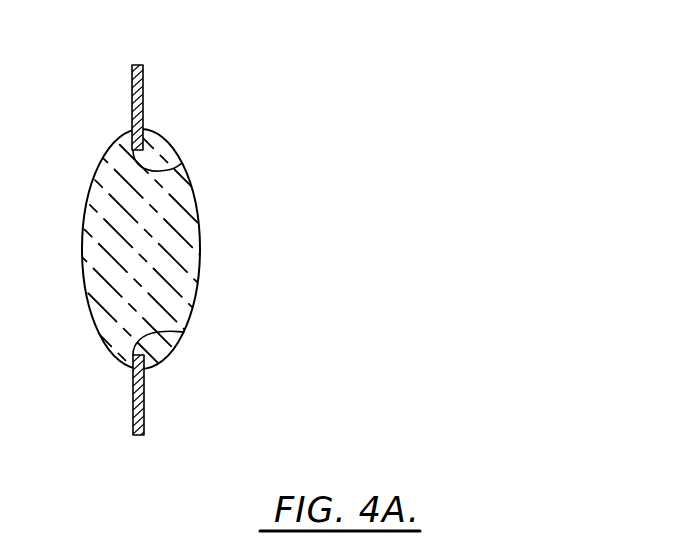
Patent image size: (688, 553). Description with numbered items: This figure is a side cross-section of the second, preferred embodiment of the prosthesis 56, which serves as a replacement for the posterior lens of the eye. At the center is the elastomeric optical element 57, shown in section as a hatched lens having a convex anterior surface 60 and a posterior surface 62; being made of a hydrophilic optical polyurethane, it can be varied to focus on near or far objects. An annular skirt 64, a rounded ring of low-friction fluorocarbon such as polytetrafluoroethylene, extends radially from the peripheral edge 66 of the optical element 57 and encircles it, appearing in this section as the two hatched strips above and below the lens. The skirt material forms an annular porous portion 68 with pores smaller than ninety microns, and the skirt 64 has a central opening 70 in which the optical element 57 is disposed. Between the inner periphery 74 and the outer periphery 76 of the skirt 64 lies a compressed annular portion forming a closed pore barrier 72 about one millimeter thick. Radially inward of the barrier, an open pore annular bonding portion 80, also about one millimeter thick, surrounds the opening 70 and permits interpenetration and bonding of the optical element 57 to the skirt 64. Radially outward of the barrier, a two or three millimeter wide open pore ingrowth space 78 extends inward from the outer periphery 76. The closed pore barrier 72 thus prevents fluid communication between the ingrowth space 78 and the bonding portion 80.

The prosthesis 56 is at (192, 252).
The optical element 57 is at (150, 260).
The convex anterior surface 60 is at (192, 250).
The posterior surface 62 is at (192, 250).
The annular skirt 64 is at (198, 248).
The peripheral edge 66 is at (130, 133).
The annular porous portion 68 is at (157, 248).
The central opening 70 is at (150, 167).
The closed pore barrier 72 is at (198, 248).
The inner periphery 74 is at (168, 333).
The outer periphery 76 is at (138, 65).
The open pore ingrowth space 78 is at (184, 248).
The open pore annular bonding portion 80 is at (143, 137).